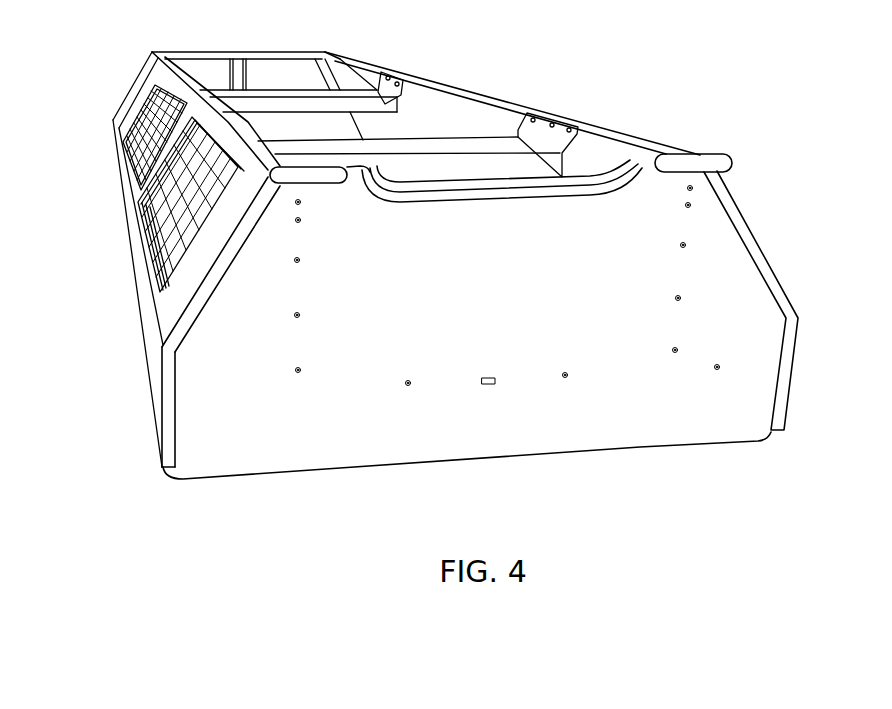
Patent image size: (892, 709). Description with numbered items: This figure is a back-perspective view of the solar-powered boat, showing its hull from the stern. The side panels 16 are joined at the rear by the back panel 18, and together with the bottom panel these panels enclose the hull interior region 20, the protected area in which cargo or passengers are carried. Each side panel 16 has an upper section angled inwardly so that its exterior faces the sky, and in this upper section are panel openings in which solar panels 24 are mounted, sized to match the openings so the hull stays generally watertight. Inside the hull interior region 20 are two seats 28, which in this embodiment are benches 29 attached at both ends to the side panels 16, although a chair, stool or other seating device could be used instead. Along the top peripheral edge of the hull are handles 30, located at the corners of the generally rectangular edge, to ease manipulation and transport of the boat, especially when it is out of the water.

The side panel 16 is at (175, 308).
The back panel 18 is at (355, 352).
The hull interior region 20 is at (287, 128).
The solar panel 24 is at (165, 205).
The seat 28 is at (379, 104).
The bench 29 is at (422, 165).
The handle 30 is at (733, 161).